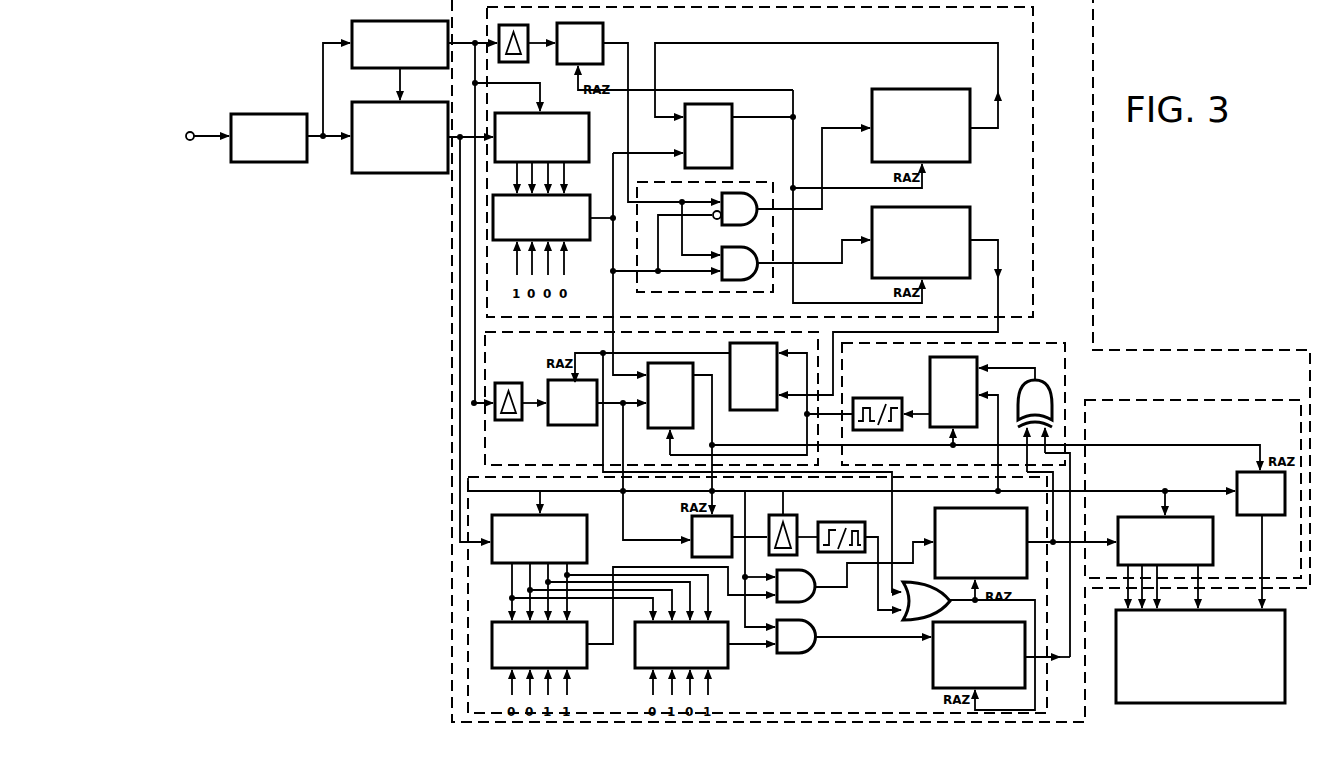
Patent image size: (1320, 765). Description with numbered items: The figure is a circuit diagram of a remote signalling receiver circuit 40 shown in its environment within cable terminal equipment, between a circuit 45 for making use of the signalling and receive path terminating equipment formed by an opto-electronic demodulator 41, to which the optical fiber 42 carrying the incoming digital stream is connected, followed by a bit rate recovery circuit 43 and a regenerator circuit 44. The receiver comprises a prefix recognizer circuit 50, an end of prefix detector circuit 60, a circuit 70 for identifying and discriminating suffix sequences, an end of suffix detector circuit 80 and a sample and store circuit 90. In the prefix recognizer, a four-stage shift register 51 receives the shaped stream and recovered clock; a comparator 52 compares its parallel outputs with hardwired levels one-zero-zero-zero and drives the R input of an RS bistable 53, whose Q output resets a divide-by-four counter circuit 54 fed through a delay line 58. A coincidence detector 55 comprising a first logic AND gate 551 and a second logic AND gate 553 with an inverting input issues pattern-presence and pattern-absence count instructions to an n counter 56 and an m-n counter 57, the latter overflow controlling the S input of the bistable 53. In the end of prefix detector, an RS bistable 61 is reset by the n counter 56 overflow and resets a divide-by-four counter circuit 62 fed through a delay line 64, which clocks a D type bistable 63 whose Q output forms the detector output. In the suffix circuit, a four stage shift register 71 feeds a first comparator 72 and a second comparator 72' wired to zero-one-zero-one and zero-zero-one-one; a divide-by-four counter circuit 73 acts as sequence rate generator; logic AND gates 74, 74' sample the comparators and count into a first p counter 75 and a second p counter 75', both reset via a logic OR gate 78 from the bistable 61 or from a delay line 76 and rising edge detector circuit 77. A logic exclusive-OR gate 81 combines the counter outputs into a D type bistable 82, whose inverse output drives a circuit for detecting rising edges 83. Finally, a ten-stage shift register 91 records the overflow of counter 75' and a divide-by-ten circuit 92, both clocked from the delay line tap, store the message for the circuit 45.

The remote signalling receiver circuit 40 is at (1098, 205).
The opto-electronic demodulator 41 is at (258, 114).
The optical fiber 42 is at (194, 131).
The bit rate recovery circuit 43 is at (392, 68).
The regenerator circuit 44 is at (422, 173).
The circuit for making use of the signalling 45 is at (1125, 664).
The prefix recognizer circuit 50 is at (1036, 48).
The four-stage shift register 51 is at (589, 142).
The comparator 52 is at (585, 242).
The RS bistable 53 is at (733, 131).
The divide-by-four counter circuit 54 is at (603, 32).
The coincidence detector 55 is at (777, 224).
The n counter 56 is at (948, 207).
The m-n counter 57 is at (934, 78).
The delay line 58 is at (527, 62).
The end of prefix detector circuit 60 is at (484, 370).
The RS bistable 61 is at (765, 410).
The divide-by-four counter circuit 62 is at (570, 425).
The D type bistable 63 is at (662, 428).
The delay line 64 is at (507, 420).
The circuit for identifying and discriminating suffix sequences 70 is at (466, 608).
The four stage shift register 71 is at (573, 522).
The first comparator 72 is at (665, 658).
The second comparator 72' is at (528, 628).
The divide-by-four counter circuit 73 is at (692, 535).
The logic AND gate 74 is at (811, 650).
The logic AND gate 74' is at (815, 597).
The first p counter 75 is at (959, 655).
The second p counter 75' is at (961, 541).
The delay line 76 is at (769, 530).
The rising edge detector circuit 77 is at (852, 522).
The logic OR gate 78 is at (908, 618).
The end of suffix detector circuit 80 is at (1040, 343).
The logic exclusive-OR gate 81 is at (1025, 396).
The D type bistable 82 is at (933, 372).
The circuit for detecting rising edges 83 is at (870, 398).
The sample and store circuit 90 is at (1182, 399).
The ten-stage shift register 91 is at (1205, 560).
The divide-by-ten circuit 92 is at (1237, 478).
The first logic AND gate 551 is at (762, 273).
The second logic AND gate 553 is at (745, 193).